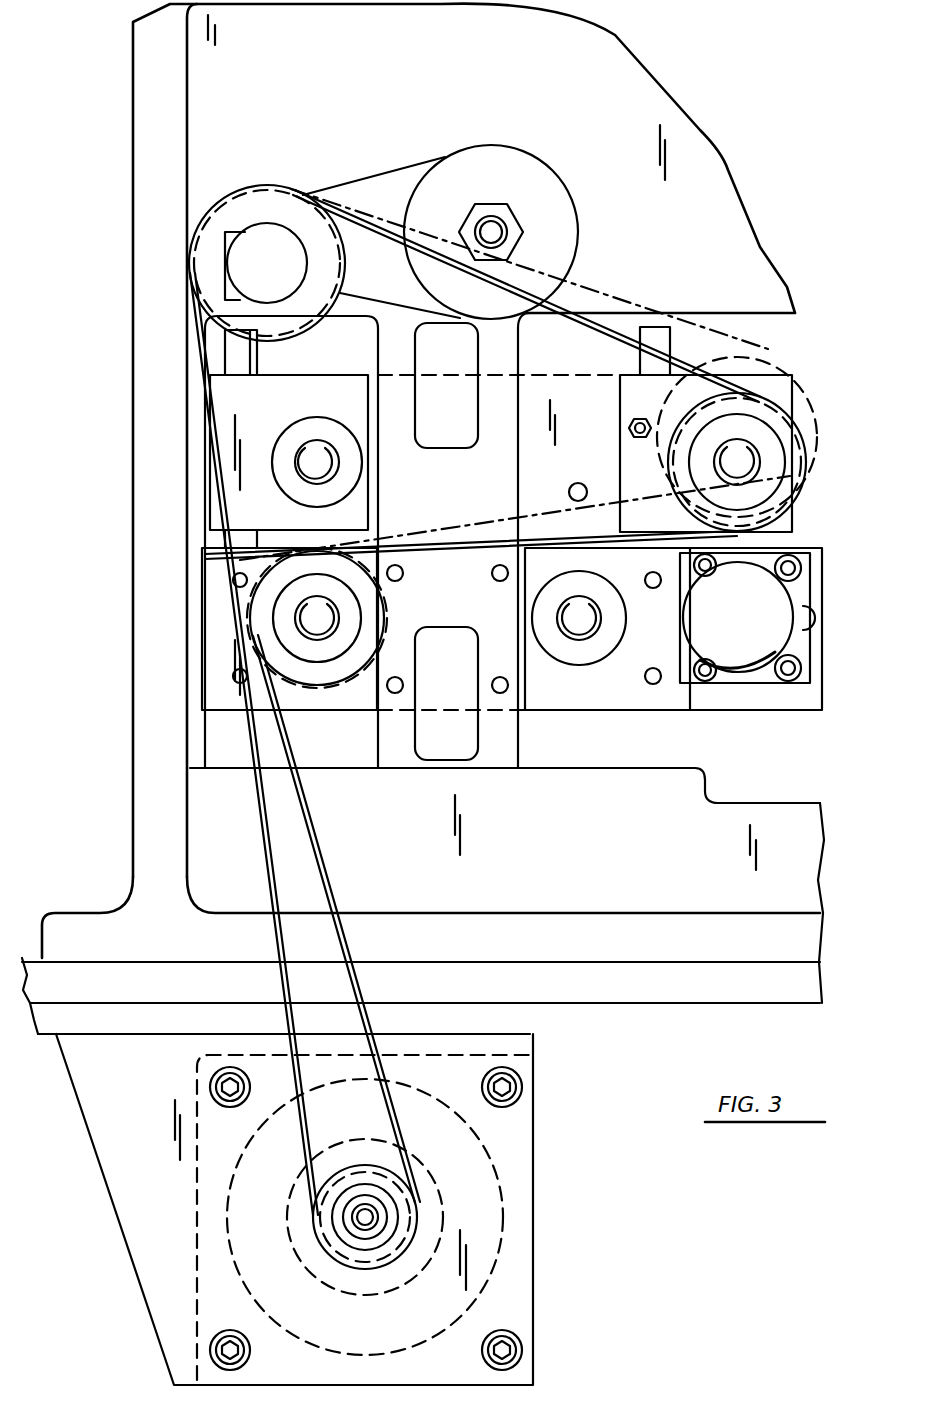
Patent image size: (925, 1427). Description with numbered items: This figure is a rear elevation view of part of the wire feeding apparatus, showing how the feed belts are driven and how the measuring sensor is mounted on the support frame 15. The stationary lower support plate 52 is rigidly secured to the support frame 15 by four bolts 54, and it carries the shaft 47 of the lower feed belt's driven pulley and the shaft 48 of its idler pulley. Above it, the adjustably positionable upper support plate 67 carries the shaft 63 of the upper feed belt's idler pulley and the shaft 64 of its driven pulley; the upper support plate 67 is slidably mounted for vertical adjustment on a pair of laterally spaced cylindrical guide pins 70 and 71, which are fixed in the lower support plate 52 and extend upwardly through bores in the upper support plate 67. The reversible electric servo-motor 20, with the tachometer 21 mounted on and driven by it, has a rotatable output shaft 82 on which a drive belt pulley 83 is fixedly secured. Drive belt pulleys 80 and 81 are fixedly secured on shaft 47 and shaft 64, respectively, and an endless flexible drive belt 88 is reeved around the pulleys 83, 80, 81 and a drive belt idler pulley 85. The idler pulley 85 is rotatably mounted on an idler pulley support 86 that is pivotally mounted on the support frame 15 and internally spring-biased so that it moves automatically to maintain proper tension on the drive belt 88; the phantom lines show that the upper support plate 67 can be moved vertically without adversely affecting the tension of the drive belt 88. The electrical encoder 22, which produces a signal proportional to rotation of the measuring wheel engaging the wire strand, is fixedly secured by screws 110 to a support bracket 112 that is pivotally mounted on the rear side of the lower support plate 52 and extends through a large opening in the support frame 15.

The support frame 15 is at (660, 148).
The servo-motor 20 is at (520, 1172).
The tachometer 21 is at (480, 1213).
The electrical encoder 22 is at (756, 616).
The shaft 47 is at (328, 616).
The shaft 48 is at (585, 610).
The lower support plate 52 is at (612, 700).
The bolts 54 is at (495, 572).
The shaft 63 is at (322, 445).
The shaft 64 is at (745, 460).
The upper support plate 67 is at (800, 402).
The guide pin 70 is at (255, 365).
The guide pin 71 is at (660, 330).
The drive belt pulley 80 is at (320, 684).
The drive belt pulley 81 is at (780, 495).
The output shaft 82 is at (372, 1214).
The drive belt pulley 83 is at (410, 1262).
The drive belt idler pulley 85 is at (298, 190).
The idler pulley support 86 is at (430, 170).
The drive belt 88 is at (320, 855).
The screws 110 is at (800, 568).
The support bracket 112 is at (805, 633).